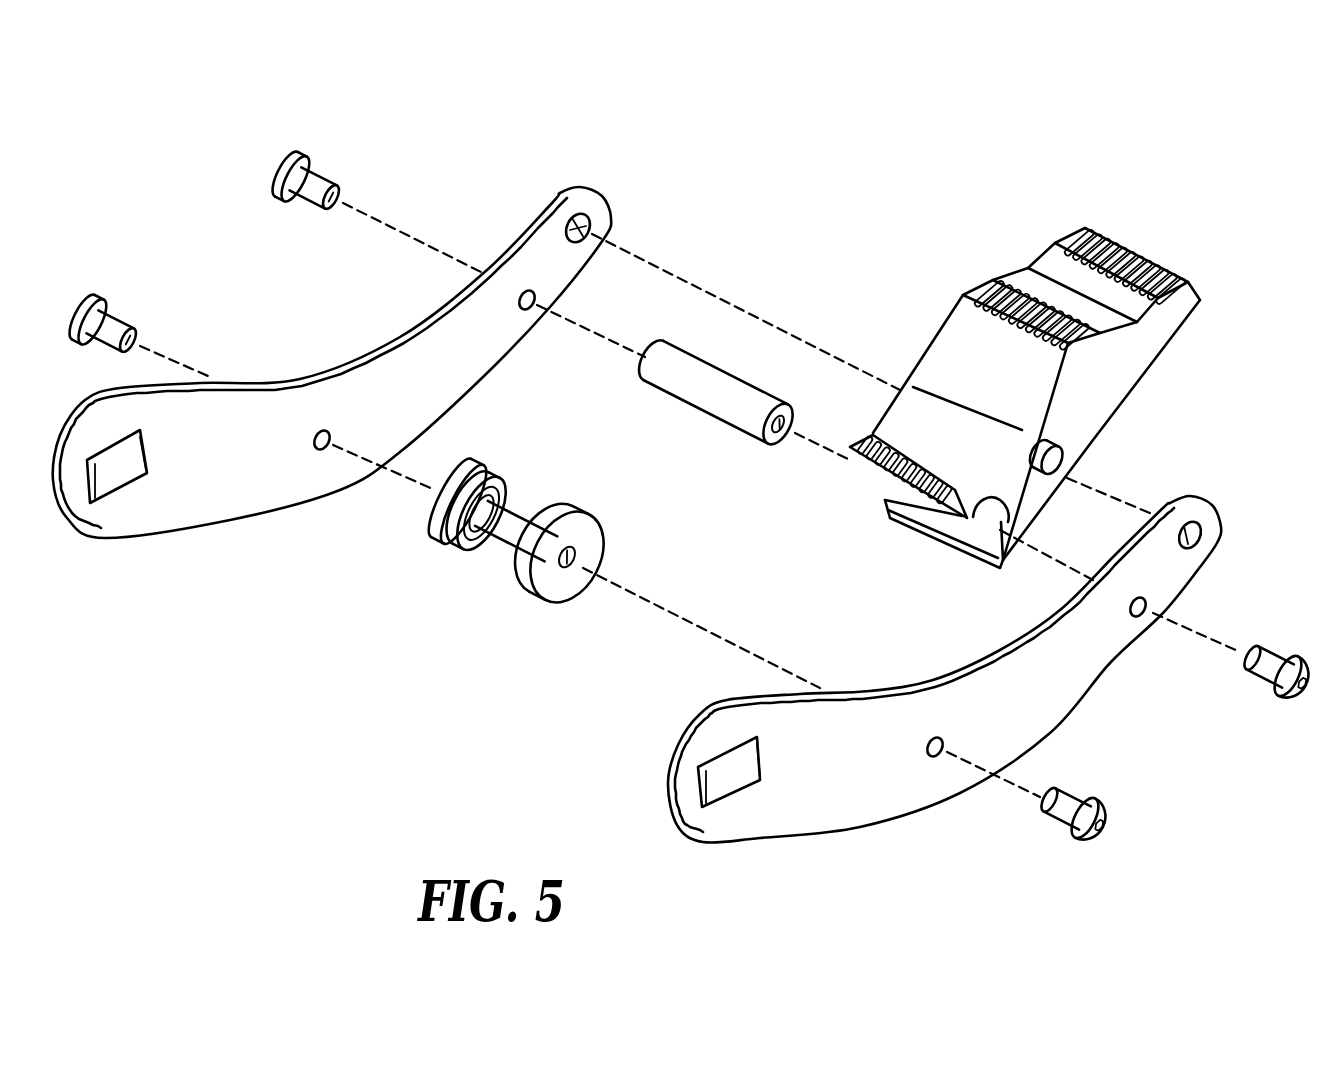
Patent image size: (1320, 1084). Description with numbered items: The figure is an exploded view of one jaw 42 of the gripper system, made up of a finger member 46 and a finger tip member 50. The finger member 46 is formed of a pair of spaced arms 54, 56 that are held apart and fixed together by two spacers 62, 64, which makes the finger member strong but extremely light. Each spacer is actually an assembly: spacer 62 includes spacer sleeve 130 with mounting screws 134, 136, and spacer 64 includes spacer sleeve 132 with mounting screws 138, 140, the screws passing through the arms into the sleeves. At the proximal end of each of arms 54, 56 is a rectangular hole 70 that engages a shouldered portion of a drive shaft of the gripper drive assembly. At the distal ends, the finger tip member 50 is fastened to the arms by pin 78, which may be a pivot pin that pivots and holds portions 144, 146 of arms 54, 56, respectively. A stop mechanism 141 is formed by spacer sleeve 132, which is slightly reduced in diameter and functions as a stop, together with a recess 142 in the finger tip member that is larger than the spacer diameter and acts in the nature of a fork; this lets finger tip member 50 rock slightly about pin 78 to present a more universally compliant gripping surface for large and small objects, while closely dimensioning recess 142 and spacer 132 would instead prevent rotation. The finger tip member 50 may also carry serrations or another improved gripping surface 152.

The jaw 42 is at (884, 104).
The finger member 46 is at (447, 184).
The finger tip member 50 is at (1244, 246).
The arm 54 is at (240, 505).
The arm 56 is at (1088, 683).
The spacer 62 is at (70, 294).
The spacer 64 is at (266, 155).
The rectangular hole 70 is at (112, 470).
The pin 78 is at (1062, 462).
The spacer sleeve 130 is at (537, 583).
The spacer sleeve 132 is at (727, 408).
The mounting screw 134 is at (118, 329).
The mounting screw 136 is at (1062, 812).
The mounting screw 138 is at (303, 203).
The mounting screw 140 is at (1268, 662).
The stop mechanism 141 is at (777, 308).
The recess 142 is at (1000, 513).
The arm portion 144 is at (1200, 537).
The arm portion 146 is at (600, 222).
The serrations 152 is at (1060, 248).